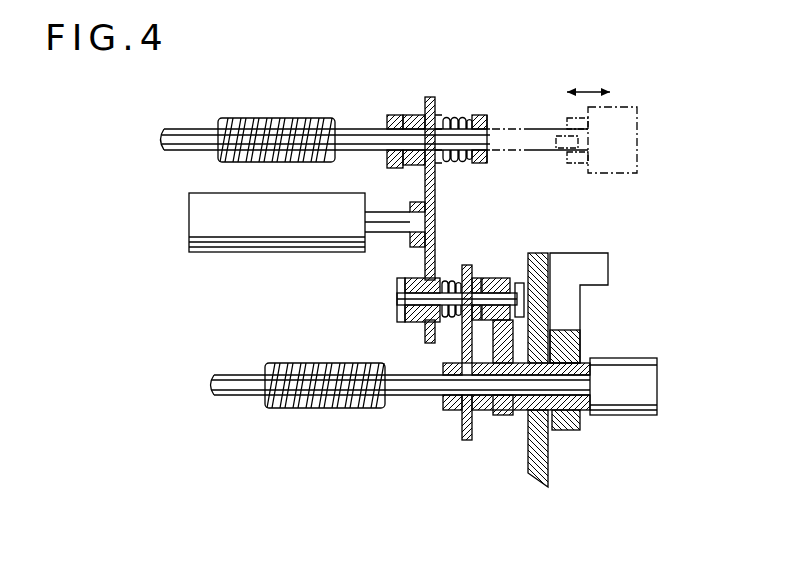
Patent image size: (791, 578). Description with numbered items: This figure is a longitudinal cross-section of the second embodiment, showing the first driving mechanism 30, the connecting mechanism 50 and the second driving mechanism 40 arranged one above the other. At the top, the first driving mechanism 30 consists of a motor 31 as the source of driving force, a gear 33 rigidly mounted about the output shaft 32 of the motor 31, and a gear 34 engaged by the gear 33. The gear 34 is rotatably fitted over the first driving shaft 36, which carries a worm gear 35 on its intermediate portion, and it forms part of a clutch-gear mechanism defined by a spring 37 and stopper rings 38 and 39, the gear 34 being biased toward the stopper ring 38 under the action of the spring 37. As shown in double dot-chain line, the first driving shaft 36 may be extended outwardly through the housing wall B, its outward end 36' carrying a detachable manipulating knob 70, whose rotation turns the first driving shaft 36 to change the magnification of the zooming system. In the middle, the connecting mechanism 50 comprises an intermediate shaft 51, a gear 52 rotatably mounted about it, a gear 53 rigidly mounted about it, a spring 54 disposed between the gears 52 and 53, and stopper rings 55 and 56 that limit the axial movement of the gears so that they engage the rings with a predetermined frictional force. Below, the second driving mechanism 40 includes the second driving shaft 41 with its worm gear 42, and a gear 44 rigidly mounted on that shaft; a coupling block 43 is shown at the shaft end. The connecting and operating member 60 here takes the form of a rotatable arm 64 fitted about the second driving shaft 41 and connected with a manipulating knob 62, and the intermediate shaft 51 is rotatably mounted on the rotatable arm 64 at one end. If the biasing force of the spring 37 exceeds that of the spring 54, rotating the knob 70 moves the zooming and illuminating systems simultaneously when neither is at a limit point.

The first driving mechanism 30 is at (457, 80).
The motor 31 is at (195, 217).
The output shaft 32 is at (390, 216).
The gear 33 is at (435, 199).
The gear 34 is at (426, 96).
The worm gear 35 is at (284, 118).
The first driving shaft 36 is at (326, 105).
The outward end 36' is at (551, 98).
The spring 37 is at (463, 115).
The stopper ring 38 is at (388, 115).
The stopper ring 39 is at (487, 148).
The second driving mechanism 40 is at (396, 456).
The second driving shaft 41 is at (232, 398).
The worm gear 42 is at (317, 412).
The coupling block 43 is at (658, 373).
The gear 44 is at (450, 412).
The connecting mechanism 50 is at (303, 307).
The intermediate shaft 51 is at (397, 312).
The gear 52 is at (410, 278).
The gear 53 is at (467, 267).
The spring 54 is at (440, 279).
The stopper ring 55 is at (398, 295).
The stopper ring 56 is at (495, 278).
The connecting and operating member 60 is at (504, 414).
The manipulating knob 62 is at (602, 276).
The rotatable arm 64 is at (492, 414).
The manipulating knob 70 is at (637, 160).
The housing wall B is at (548, 467).